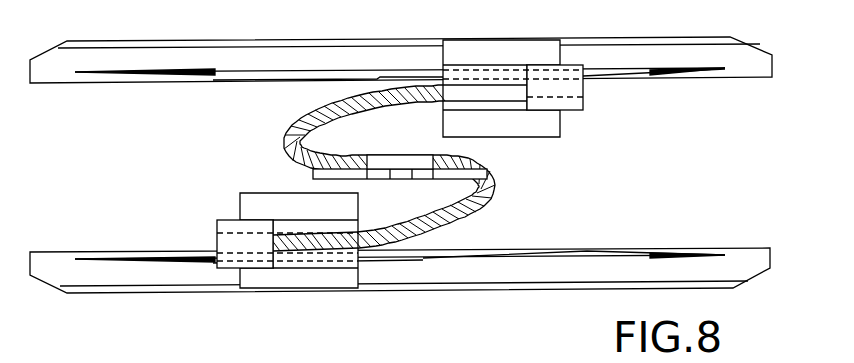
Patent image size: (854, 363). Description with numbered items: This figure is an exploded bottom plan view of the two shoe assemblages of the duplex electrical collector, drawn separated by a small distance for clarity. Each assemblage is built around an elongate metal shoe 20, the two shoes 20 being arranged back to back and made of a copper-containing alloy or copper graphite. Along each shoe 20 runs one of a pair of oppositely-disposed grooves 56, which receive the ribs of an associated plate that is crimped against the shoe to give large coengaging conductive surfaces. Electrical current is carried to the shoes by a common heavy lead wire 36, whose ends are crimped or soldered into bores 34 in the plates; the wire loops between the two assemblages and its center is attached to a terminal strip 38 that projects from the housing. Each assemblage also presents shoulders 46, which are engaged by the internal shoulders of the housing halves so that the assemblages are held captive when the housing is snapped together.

The shoe 20 is at (770, 78).
The bore 34 is at (563, 84).
The lead wire 36 is at (455, 213).
The terminal strip 38 is at (482, 176).
The shoulder 46 is at (510, 53).
The groove 56 is at (650, 75).